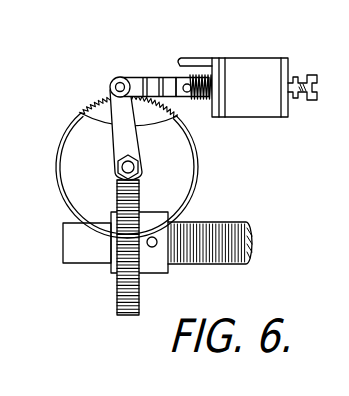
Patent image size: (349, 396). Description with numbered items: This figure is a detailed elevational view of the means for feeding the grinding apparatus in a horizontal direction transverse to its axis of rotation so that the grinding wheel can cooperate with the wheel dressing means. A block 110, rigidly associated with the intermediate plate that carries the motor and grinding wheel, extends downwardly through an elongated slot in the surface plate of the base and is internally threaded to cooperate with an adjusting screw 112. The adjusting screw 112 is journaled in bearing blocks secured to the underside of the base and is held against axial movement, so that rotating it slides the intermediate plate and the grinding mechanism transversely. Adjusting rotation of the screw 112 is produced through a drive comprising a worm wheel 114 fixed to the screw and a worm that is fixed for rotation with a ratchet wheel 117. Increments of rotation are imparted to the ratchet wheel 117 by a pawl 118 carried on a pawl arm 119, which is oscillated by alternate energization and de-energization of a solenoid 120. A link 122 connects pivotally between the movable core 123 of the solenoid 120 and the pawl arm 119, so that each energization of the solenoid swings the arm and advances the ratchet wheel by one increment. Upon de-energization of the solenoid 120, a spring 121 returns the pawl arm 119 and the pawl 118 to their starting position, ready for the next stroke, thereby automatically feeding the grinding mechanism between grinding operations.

The block 110 is at (155, 264).
The adjusting screw 112 is at (221, 222).
The worm wheel 114 is at (116, 300).
The ratchet wheel 117 is at (98, 103).
The pawl 118 is at (133, 77).
The pawl arm 119 is at (118, 136).
The solenoid 120 is at (258, 75).
The spring 121 is at (195, 74).
The link 122 is at (163, 77).
The movable core 123 is at (185, 97).